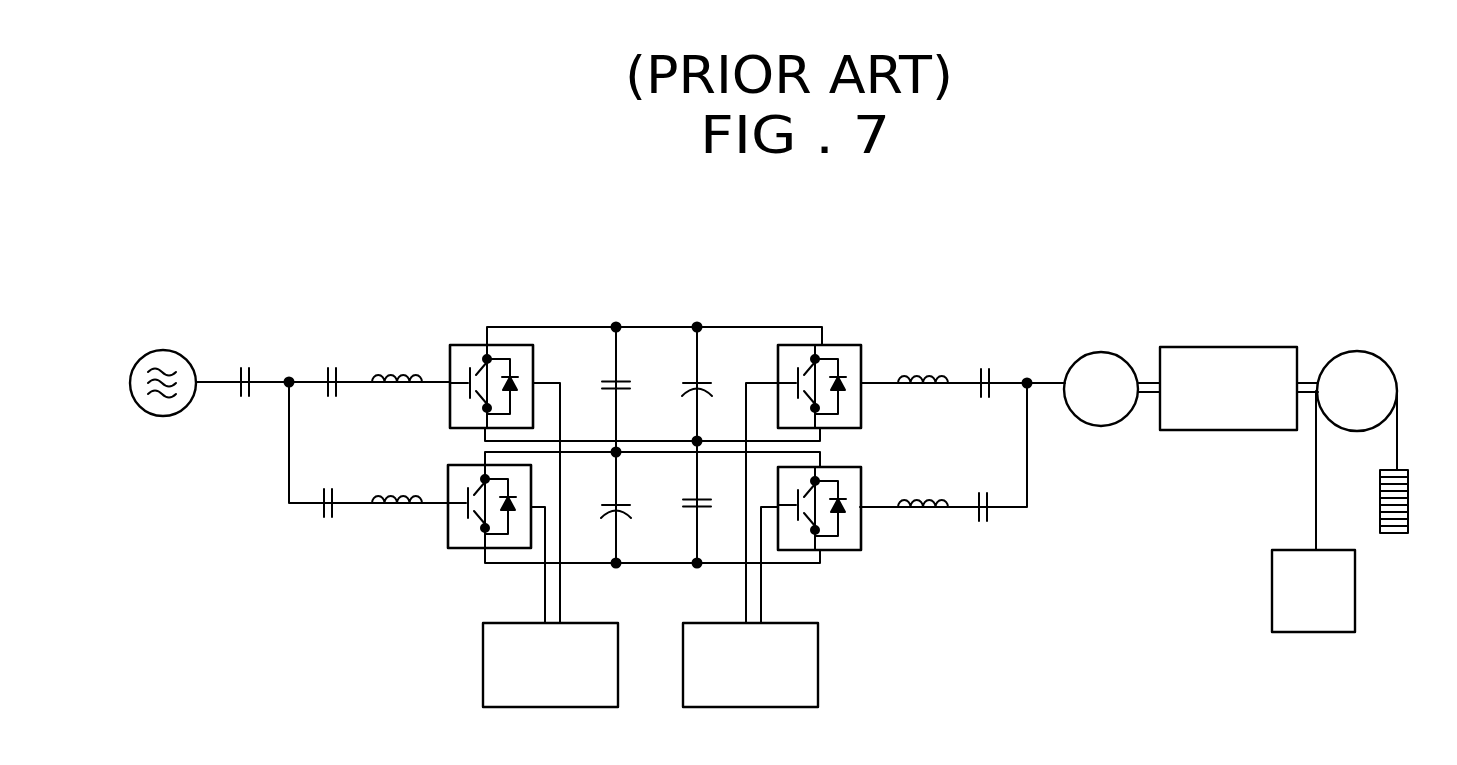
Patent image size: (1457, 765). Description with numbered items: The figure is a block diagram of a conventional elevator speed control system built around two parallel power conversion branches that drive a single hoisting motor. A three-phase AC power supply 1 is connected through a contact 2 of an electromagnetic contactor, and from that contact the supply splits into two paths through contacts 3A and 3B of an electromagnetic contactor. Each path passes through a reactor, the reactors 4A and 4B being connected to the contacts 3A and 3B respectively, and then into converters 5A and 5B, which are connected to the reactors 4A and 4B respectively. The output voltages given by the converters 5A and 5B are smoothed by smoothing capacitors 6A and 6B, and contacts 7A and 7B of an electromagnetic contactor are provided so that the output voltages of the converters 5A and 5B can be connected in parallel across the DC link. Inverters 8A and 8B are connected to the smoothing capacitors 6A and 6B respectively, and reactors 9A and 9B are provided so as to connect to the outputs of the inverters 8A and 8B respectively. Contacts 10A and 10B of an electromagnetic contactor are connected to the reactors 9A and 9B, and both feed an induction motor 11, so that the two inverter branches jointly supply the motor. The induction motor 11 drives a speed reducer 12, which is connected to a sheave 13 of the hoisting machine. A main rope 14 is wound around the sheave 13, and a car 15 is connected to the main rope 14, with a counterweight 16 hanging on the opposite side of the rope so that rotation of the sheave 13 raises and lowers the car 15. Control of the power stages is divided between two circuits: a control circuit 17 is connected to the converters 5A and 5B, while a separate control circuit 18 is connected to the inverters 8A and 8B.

The three-phase AC power supply 1 is at (165, 350).
The contact of electromagnetic contactor 2 is at (245, 366).
The contact of electromagnetic contactor 3A is at (333, 366).
The contact of electromagnetic contactor 3B is at (328, 490).
The reactor 4A is at (400, 373).
The reactor 4B is at (387, 497).
The converter 5A is at (473, 345).
The converter 5B is at (445, 483).
The smoothing capacitor 6A is at (703, 382).
The smoothing capacitor 6B is at (621, 505).
The contact of electromagnetic contactor 7A is at (622, 380).
The contact of electromagnetic contactor 7B is at (703, 502).
The inverter 8A is at (846, 345).
The inverter 8B is at (853, 467).
The reactor 9A is at (918, 376).
The reactor 9B is at (926, 500).
The contact of electromagnetic contactor 10A is at (992, 372).
The contact of electromagnetic contactor 10B is at (983, 521).
The induction motor 11 is at (1108, 352).
The speed reducer 12 is at (1245, 347).
The sheave 13 is at (1370, 355).
The main rope 14 is at (1399, 435).
The car 15 is at (1272, 580).
The counterweight 16 is at (1409, 510).
The control circuit 17 is at (620, 697).
The control circuit 18 is at (818, 692).